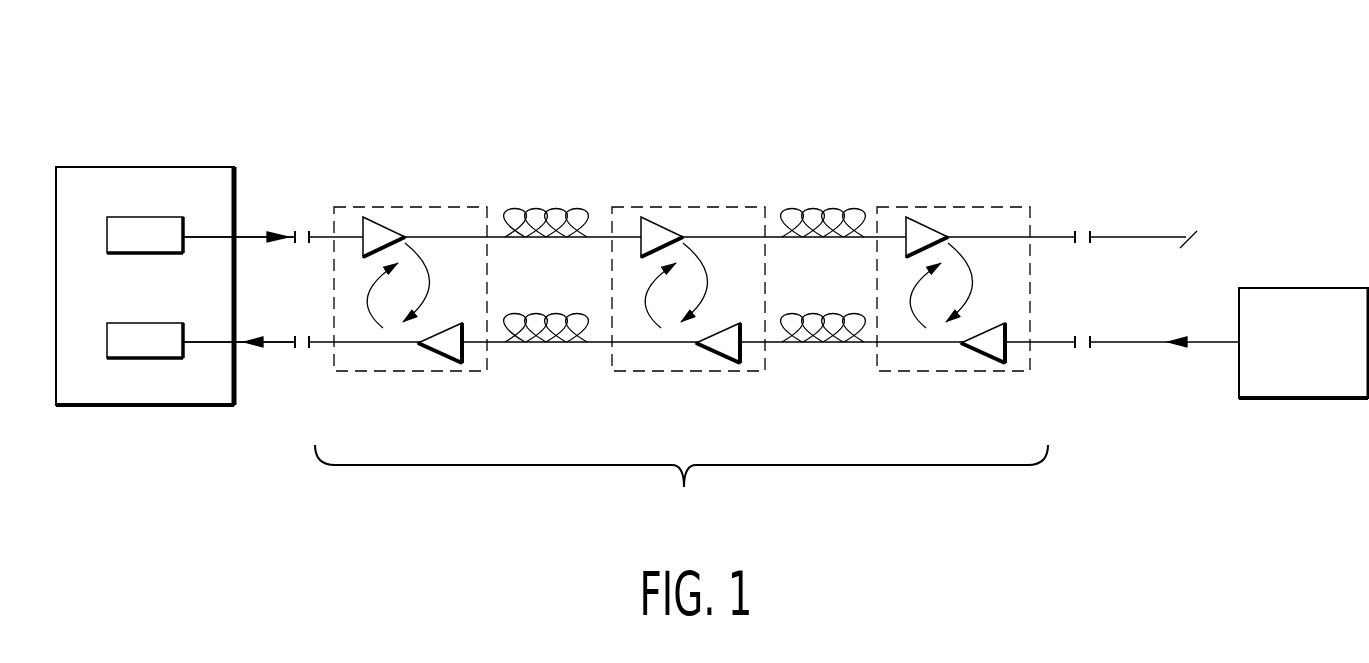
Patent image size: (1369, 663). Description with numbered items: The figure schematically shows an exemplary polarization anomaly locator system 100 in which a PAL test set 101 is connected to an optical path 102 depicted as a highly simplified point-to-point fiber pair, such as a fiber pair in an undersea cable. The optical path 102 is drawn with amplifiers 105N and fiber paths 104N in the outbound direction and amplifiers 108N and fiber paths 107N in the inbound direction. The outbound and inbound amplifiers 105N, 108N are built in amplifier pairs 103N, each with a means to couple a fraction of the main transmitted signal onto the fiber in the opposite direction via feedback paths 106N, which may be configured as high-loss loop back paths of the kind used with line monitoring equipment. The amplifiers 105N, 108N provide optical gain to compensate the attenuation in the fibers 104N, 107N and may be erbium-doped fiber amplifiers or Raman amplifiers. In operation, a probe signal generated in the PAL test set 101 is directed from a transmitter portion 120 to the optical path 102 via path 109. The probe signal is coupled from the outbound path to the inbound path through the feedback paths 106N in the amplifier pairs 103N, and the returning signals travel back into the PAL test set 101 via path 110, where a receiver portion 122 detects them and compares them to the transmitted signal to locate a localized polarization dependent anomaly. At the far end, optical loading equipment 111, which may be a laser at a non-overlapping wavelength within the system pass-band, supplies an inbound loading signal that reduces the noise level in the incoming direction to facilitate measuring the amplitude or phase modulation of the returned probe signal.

The system 100 is at (650, 104).
The PAL test set 101 is at (197, 167).
The optical path 102 is at (681, 492).
The amplifier pairs 103N is at (400, 205).
The fiber paths 104N is at (553, 207).
The amplifiers 105N is at (660, 227).
The feedback paths 106N is at (368, 294).
The fiber paths 107N is at (538, 345).
The amplifiers 108N is at (715, 357).
The path 109 is at (258, 235).
The path 110 is at (273, 343).
The optical loading equipment 111 is at (1303, 398).
The transmitter portion 120 is at (160, 253).
The receiver portion 122 is at (160, 358).